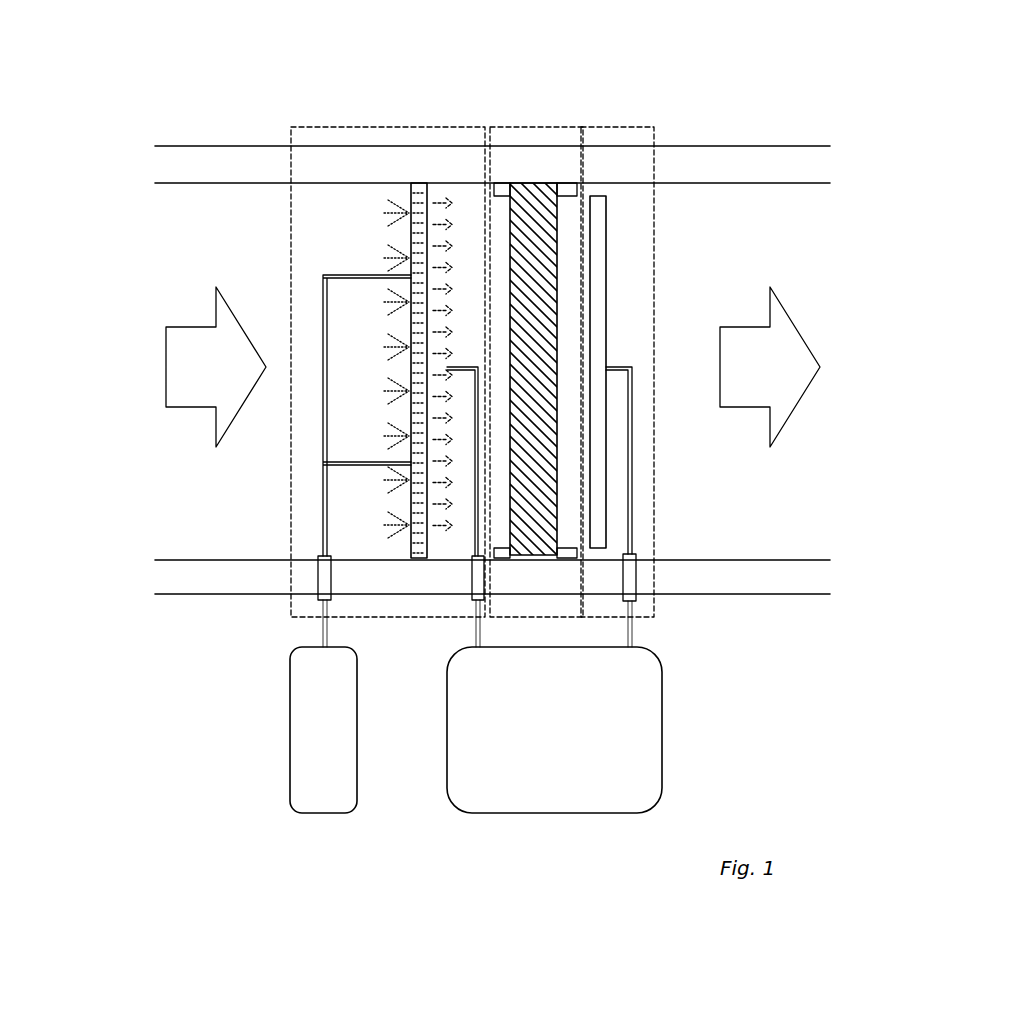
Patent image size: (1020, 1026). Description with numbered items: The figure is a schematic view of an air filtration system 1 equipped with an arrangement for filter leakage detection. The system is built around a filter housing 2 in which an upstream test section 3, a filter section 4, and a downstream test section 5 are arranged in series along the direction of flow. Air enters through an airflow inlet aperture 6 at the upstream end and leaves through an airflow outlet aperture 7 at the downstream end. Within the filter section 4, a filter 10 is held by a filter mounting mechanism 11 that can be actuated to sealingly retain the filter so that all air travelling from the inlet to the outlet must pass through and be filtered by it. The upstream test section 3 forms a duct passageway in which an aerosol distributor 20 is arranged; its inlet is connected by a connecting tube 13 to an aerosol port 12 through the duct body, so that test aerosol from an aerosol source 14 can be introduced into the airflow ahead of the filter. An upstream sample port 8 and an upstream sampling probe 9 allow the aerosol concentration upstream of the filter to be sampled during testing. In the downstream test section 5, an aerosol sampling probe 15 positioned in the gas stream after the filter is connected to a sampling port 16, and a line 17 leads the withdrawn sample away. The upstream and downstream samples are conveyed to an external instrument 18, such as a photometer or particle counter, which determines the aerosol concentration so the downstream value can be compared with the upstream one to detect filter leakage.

The air filtration system 1 is at (172, 66).
The filter housing 2 is at (367, 146).
The upstream test section 3 is at (320, 127).
The filter section 4 is at (530, 127).
The downstream test section 5 is at (636, 127).
The airflow inlet aperture 6 is at (180, 303).
The airflow outlet aperture 7 is at (788, 485).
The upstream sample port 8 is at (472, 580).
The upstream sampling probe 9 is at (447, 367).
The filter 10 is at (530, 183).
The filter mounting mechanism 11 is at (567, 183).
The aerosol port 12 is at (318, 578).
The connecting tube 13 is at (323, 468).
The aerosol source 14 is at (290, 730).
The aerosol sampling probe 15 is at (606, 228).
The sampling port 16 is at (636, 580).
The return line 17 is at (632, 440).
The external instrument 18 is at (662, 730).
The aerosol distributor 20 is at (411, 183).